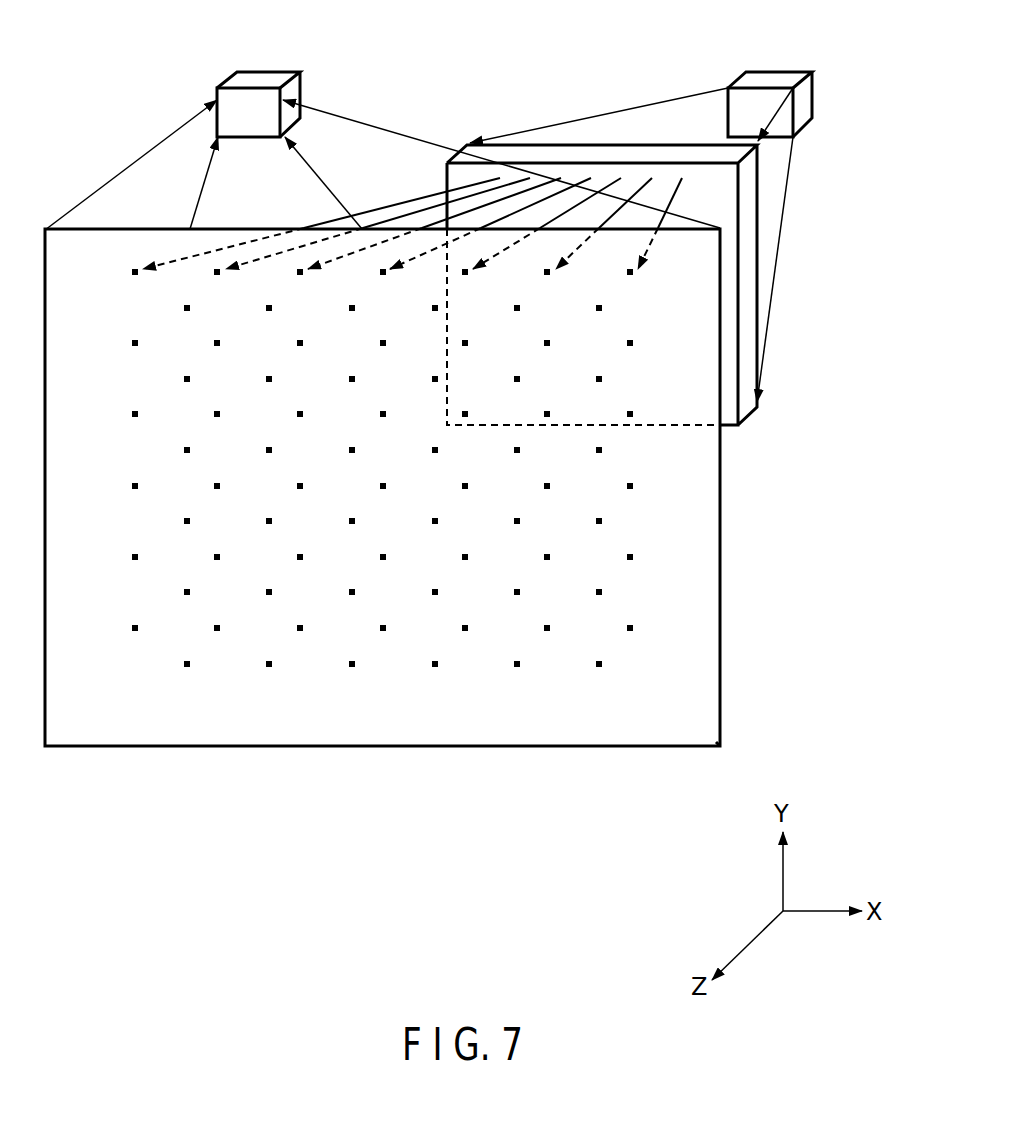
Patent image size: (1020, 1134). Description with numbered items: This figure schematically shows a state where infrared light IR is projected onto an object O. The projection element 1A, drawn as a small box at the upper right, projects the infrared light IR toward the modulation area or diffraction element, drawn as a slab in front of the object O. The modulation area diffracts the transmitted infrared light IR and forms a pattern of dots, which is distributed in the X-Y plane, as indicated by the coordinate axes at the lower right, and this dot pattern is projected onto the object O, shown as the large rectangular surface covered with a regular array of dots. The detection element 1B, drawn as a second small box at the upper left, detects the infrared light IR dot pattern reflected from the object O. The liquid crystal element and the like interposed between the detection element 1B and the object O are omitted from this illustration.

The projection element 1A is at (778, 78).
The detection element 1B is at (268, 78).
The infrared light IR is at (775, 187).
The object O is at (712, 748).